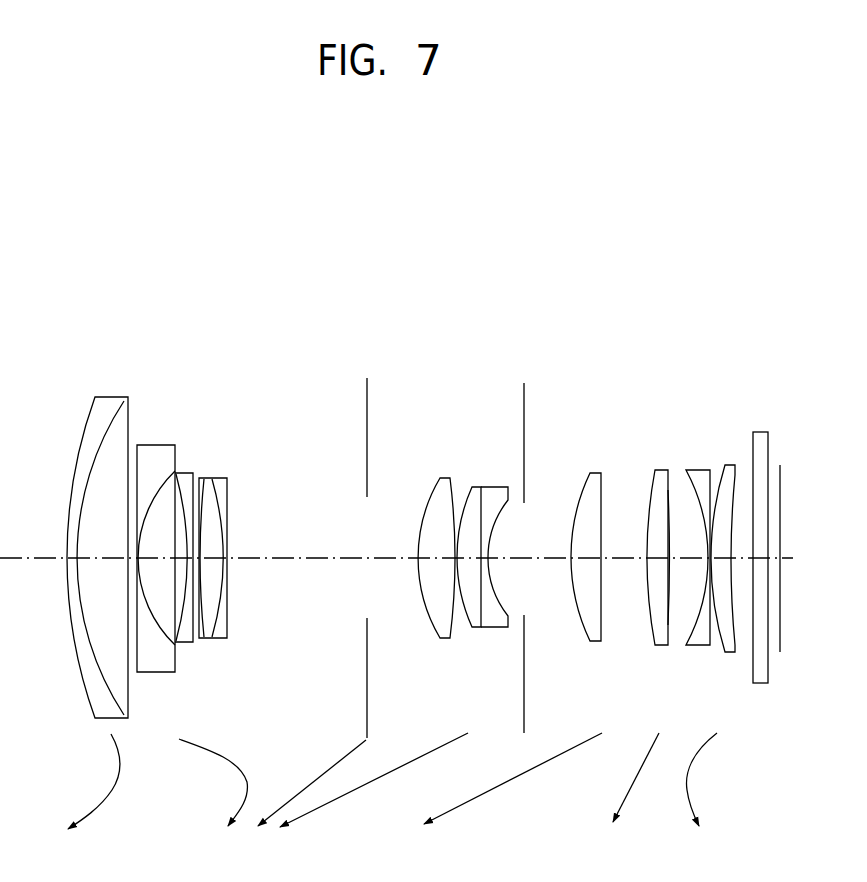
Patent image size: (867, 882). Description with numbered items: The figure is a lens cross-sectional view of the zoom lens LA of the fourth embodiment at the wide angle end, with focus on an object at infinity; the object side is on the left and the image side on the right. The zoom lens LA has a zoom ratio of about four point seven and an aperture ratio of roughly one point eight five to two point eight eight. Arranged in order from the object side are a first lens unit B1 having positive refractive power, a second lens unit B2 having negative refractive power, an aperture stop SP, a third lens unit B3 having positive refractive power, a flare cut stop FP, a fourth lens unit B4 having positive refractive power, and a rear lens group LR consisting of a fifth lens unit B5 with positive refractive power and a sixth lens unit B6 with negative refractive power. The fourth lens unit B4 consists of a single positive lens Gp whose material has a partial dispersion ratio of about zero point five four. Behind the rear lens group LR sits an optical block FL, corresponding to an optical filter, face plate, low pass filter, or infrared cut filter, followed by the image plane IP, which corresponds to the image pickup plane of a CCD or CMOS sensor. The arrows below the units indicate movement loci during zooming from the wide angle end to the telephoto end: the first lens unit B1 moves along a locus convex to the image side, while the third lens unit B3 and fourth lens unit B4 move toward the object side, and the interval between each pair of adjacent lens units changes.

The zoom lens LA is at (732, 313).
The first lens unit B1 is at (123, 388).
The second lens unit B2 is at (223, 388).
The third lens unit B3 is at (545, 390).
The fourth lens unit B4 is at (602, 388).
The fifth lens unit B5 is at (669, 388).
The sixth lens unit B6 is at (727, 388).
The rear lens group LR is at (730, 343).
The aperture stop SP is at (373, 447).
The flare cut stop FP is at (526, 446).
The positive lens Gp is at (592, 478).
The optical block FL is at (765, 448).
The image plane IP is at (778, 512).